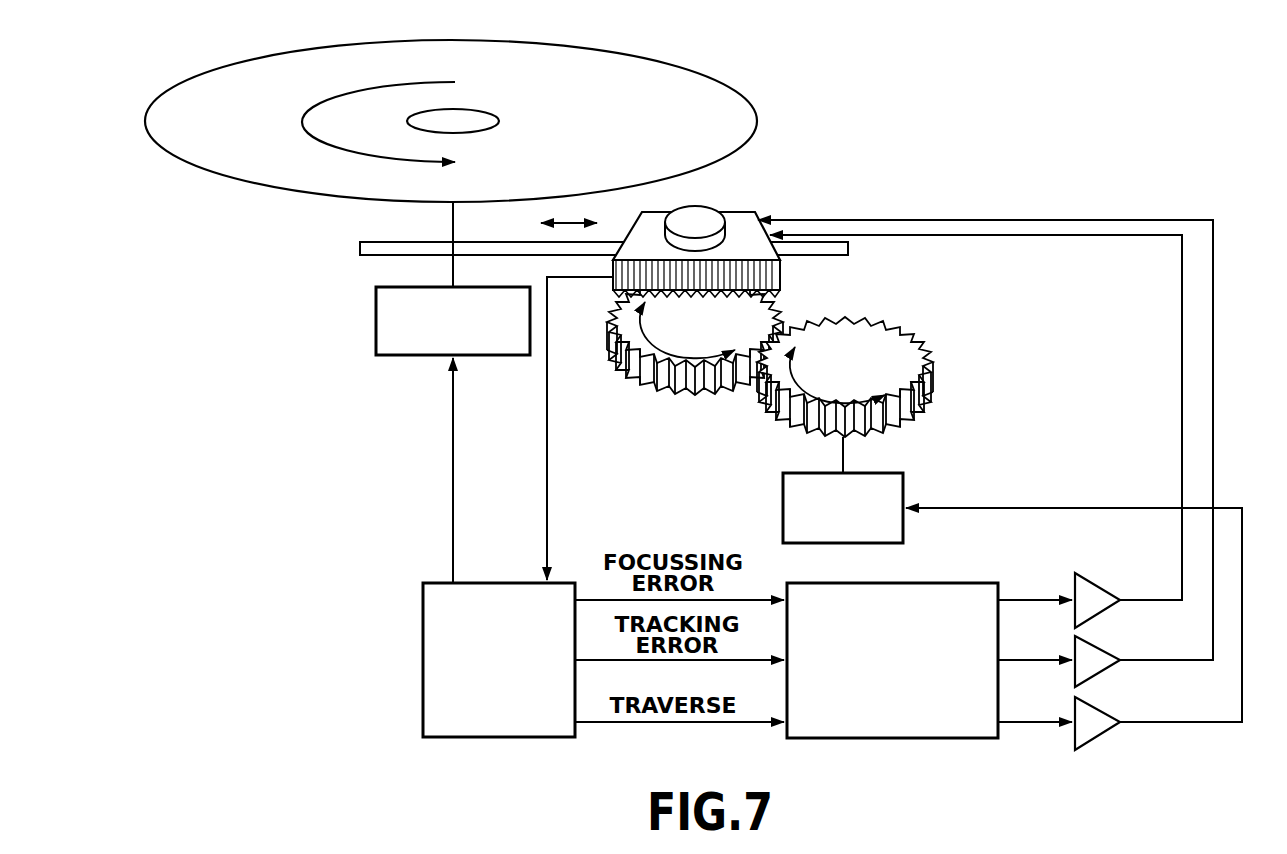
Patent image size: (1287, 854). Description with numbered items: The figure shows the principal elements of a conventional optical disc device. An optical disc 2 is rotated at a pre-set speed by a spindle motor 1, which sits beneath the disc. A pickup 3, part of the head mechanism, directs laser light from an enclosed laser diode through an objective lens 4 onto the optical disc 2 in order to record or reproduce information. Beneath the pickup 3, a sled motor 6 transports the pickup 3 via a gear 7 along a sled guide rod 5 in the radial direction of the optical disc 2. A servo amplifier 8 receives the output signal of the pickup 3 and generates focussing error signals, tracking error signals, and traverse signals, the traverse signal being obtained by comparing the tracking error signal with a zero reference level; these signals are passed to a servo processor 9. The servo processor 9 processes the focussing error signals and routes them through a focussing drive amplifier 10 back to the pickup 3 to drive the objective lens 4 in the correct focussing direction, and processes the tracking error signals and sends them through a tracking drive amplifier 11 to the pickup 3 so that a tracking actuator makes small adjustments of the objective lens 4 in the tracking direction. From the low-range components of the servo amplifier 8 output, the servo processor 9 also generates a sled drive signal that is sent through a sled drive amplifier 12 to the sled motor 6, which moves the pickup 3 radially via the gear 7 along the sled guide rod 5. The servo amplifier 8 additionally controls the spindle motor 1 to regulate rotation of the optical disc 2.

The spindle motor 1 is at (376, 311).
The optical disc 2 is at (677, 62).
The pickup 3 is at (745, 212).
The objective lens 4 is at (712, 210).
The sled guide rod 5 is at (835, 256).
The sled motor 6 is at (885, 473).
The gear 7 is at (716, 396).
The servo amplifier 8 is at (423, 647).
The servo processor 9 is at (925, 583).
The focussing drive amplifier 10 is at (1100, 585).
The tracking drive amplifier 11 is at (1108, 648).
The sled drive amplifier 12 is at (1110, 706).